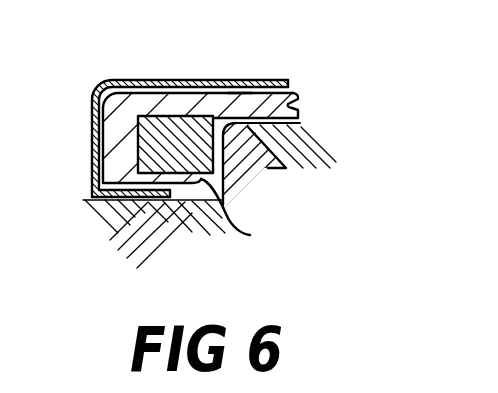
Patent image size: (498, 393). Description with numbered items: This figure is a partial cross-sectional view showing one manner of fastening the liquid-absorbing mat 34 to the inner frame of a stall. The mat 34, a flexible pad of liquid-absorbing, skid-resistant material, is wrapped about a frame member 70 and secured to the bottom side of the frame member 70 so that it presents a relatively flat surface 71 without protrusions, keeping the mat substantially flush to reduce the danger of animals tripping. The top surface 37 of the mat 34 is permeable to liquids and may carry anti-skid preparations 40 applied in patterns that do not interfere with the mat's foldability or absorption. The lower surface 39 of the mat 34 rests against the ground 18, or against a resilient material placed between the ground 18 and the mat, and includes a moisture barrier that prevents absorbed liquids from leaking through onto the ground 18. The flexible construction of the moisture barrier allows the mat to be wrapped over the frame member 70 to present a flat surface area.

The ground 18 is at (272, 169).
The liquid-absorbing mat 34 is at (293, 95).
The top surface 37 is at (241, 92).
The lower surface 39 is at (300, 123).
The anti-skid preparations 40 is at (208, 80).
The frame member 70 is at (250, 235).
The flat surface 71 is at (289, 81).